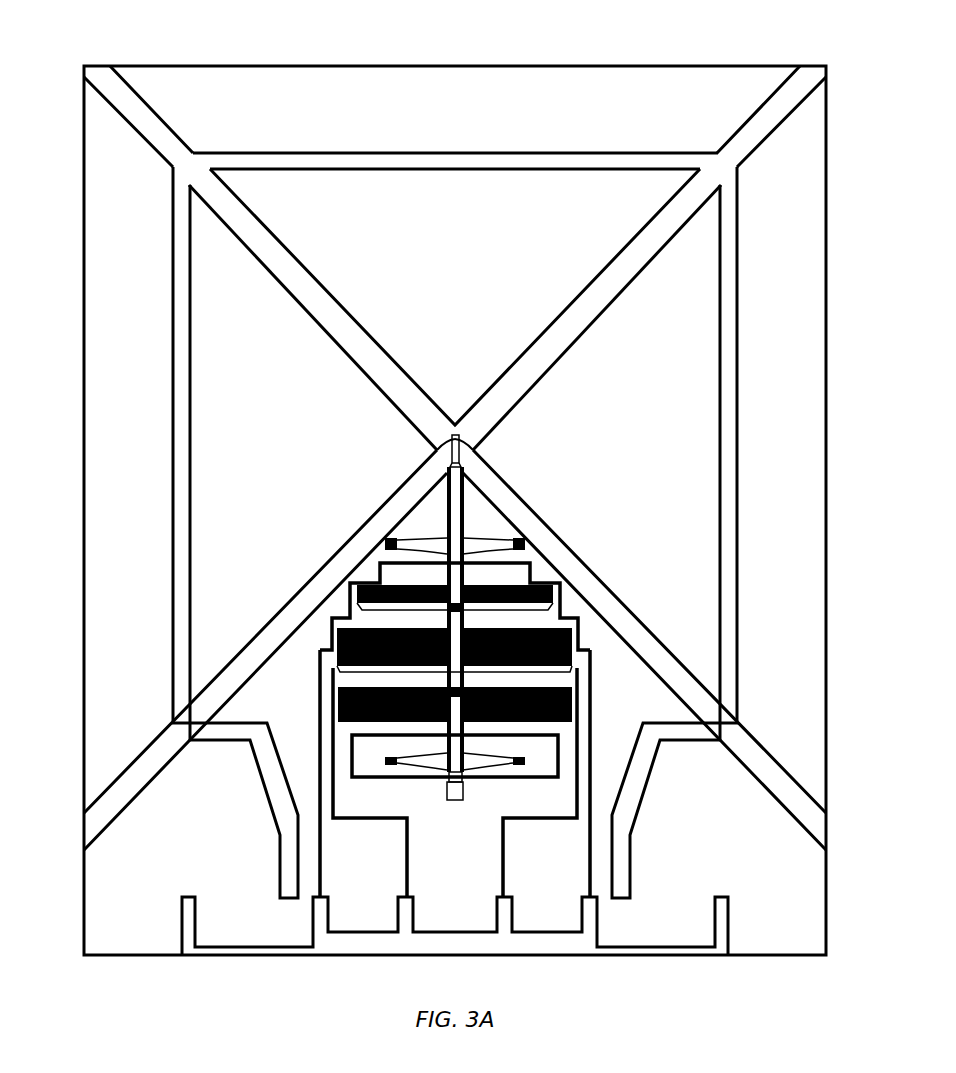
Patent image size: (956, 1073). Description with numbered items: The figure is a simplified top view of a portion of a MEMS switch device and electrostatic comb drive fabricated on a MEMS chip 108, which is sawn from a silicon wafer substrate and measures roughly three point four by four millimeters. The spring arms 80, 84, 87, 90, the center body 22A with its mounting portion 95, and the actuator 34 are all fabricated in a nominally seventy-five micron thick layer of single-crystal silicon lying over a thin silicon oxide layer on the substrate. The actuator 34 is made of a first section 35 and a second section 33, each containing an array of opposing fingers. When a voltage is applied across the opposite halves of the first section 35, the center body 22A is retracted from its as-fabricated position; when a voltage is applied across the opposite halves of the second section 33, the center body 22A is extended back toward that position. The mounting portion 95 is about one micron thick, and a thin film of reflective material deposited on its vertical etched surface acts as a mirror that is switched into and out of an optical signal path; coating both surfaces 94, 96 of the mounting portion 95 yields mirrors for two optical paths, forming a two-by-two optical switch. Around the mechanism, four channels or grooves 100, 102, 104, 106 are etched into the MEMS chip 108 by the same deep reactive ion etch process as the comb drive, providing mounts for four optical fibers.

The channel 100 is at (100, 73).
The channel 102 is at (810, 78).
The channel 104 is at (826, 828).
The channel 106 is at (84, 828).
The MEMS chip 108 is at (83, 478).
The mounting portion 95 is at (455, 432).
The surface of mounting portion 94 is at (437, 447).
The surface of mounting portion 96 is at (473, 447).
The spring arm 80 is at (413, 538).
The spring arm 84 is at (497, 538).
The second section 33 is at (345, 614).
The actuator 34 is at (565, 614).
The first section 35 is at (318, 685).
The spring arm 87 is at (417, 763).
The spring arm 90 is at (492, 763).
The center body 22A is at (455, 802).